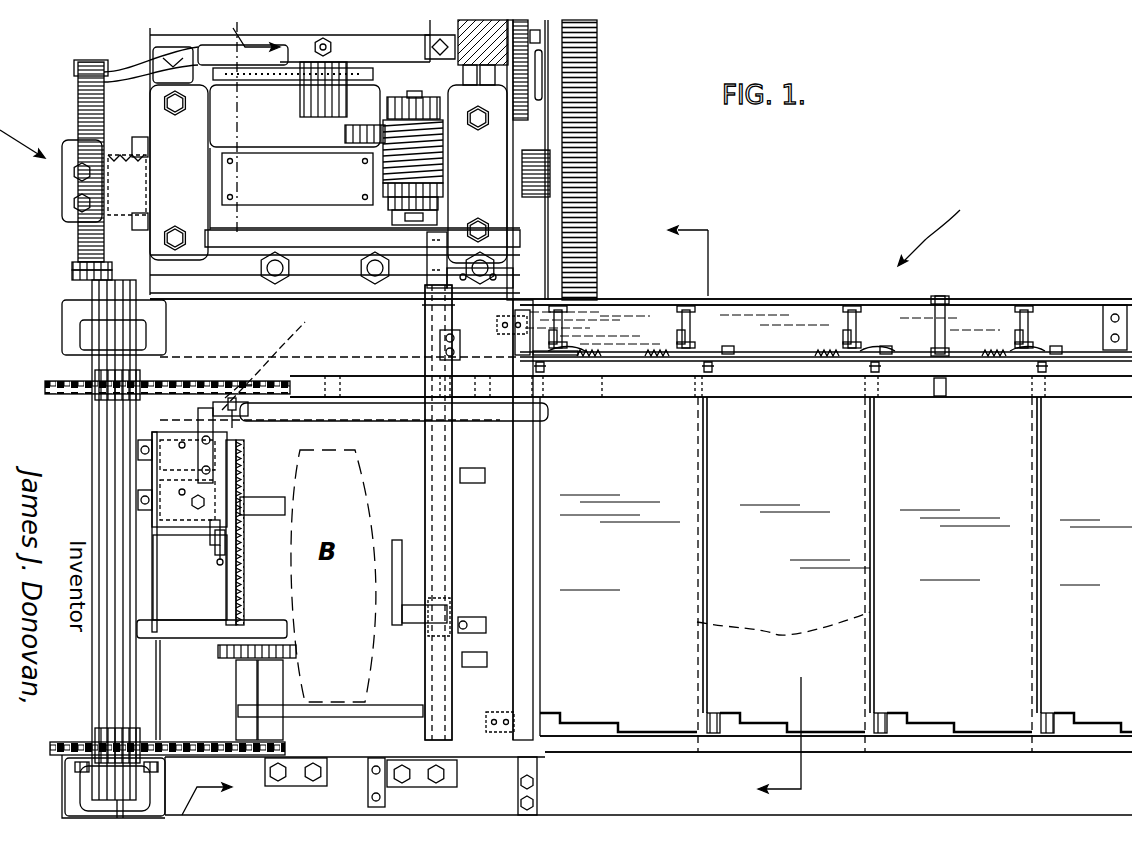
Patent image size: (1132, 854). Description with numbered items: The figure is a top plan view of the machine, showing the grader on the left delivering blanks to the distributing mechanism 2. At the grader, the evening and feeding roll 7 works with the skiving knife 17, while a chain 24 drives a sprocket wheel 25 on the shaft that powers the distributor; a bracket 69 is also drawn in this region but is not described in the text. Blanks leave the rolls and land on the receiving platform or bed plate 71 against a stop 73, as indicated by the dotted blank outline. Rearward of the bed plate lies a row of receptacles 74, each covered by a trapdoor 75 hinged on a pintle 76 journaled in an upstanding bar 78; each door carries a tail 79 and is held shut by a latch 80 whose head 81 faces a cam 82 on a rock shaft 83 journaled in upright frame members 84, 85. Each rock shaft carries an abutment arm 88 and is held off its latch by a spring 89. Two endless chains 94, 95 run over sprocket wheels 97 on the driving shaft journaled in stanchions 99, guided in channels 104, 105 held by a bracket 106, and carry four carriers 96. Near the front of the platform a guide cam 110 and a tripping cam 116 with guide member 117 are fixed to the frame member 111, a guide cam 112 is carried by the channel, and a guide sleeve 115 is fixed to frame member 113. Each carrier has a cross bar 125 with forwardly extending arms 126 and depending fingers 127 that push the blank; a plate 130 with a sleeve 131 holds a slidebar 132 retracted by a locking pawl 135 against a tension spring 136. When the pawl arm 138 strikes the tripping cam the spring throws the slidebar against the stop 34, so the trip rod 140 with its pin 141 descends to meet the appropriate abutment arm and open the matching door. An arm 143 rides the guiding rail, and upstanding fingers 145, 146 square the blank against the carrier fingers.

The distributing mechanism 2 is at (578, 416).
The evening and feeding roll 7 is at (741, 505).
The skiving knife 17 is at (290, 238).
The chain 24 is at (78, 264).
The sprocket wheel 25 is at (72, 282).
The stop 34 is at (415, 306).
The bracket 69 is at (478, 318).
The receiving platform or bed plate 71 is at (400, 517).
The stop 73 is at (388, 703).
The unloading stations, bins or receptacles 74 is at (868, 763).
The trapdoor or tilting gate 75 is at (820, 566).
The pintle 76 is at (783, 626).
The upstanding bar 78 is at (834, 400).
The arm or tail 79 is at (1058, 714).
The latch 80 is at (884, 398).
The head 81 is at (892, 350).
The cam 82 is at (1020, 351).
The rock shaft 83 is at (1032, 322).
The upright frame member 84 is at (762, 300).
The upright frame member 85 is at (908, 360).
The latch releasing member or abutment arm 88 is at (1006, 333).
The spring 89 is at (975, 350).
The endless chain 94 is at (252, 378).
The endless chain 95 is at (195, 740).
The carrier 96 is at (158, 575).
The sprocket wheel 97 is at (75, 738).
The stanchion 99 is at (80, 768).
The channel 104 is at (670, 394).
The channel 105 is at (605, 752).
The bracket 106 is at (368, 785).
The guide cam 110 is at (330, 422).
The frame member 111 is at (452, 528).
The guide cam 112 is at (380, 392).
The frame member 113 is at (290, 676).
The guide sleeve 115 is at (218, 653).
The tripping cam 116 is at (395, 615).
The guide member 117 is at (482, 617).
The cross bar 125 is at (158, 608).
The forwardly extending arm 126 is at (262, 620).
The downwardly extending finger 127 is at (138, 500).
The plate 130 is at (189, 479).
The sleeve 131 is at (240, 460).
The bar 132 is at (232, 580).
The latch or locking pawl 135 is at (212, 528).
The tension spring 136 is at (244, 562).
The arm 138 is at (218, 552).
The trip rod 140 is at (210, 405).
The arm or pin 141 is at (232, 415).
The arm 143 is at (198, 418).
The upstanding finger 145 is at (470, 468).
The upstanding finger 146 is at (472, 664).